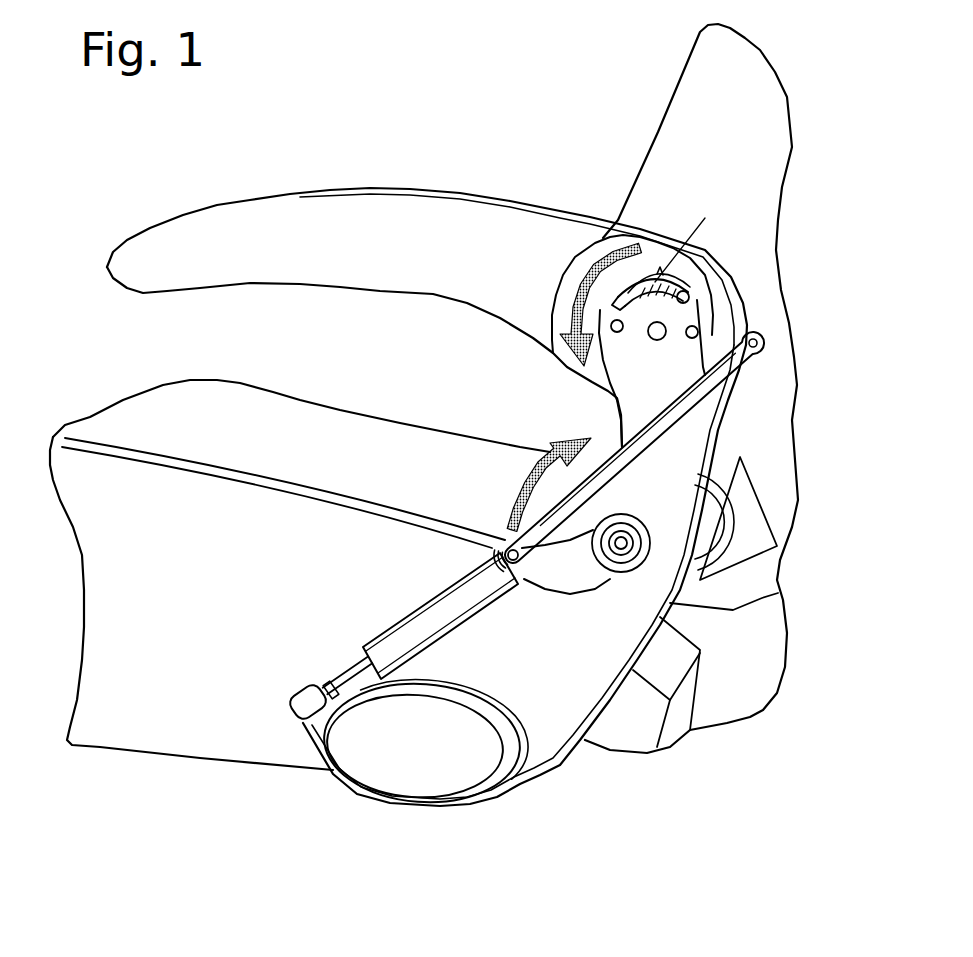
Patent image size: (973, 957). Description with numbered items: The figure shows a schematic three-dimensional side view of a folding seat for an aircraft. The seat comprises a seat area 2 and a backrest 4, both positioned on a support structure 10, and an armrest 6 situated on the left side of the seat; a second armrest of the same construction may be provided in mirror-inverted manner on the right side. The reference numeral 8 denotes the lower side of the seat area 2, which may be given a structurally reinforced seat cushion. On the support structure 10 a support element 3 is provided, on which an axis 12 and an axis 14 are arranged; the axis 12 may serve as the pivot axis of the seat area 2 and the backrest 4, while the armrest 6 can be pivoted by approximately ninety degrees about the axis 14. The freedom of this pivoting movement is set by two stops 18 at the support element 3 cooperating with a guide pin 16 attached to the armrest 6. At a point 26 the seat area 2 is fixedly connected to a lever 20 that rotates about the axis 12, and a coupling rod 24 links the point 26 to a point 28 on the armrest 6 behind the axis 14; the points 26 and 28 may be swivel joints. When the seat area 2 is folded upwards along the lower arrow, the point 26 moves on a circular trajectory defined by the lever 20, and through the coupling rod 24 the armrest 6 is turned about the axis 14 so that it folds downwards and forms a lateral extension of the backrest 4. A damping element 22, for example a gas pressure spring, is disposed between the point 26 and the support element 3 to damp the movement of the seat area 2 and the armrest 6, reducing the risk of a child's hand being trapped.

The seat area 2 is at (300, 398).
The support element 3 is at (560, 763).
The backrest 4 is at (658, 132).
The armrest 6 is at (407, 188).
The lower side of the seat area 8 is at (193, 760).
The support structure 10 is at (430, 803).
The axis 12 is at (620, 550).
The axis 14 is at (657, 331).
The guide pin 16 is at (690, 292).
The stops 18 is at (623, 286).
The lever 20 is at (557, 593).
The damping element 22 is at (417, 617).
The coupling rod 24 is at (690, 398).
The point 26 is at (508, 548).
The point 28 is at (760, 343).